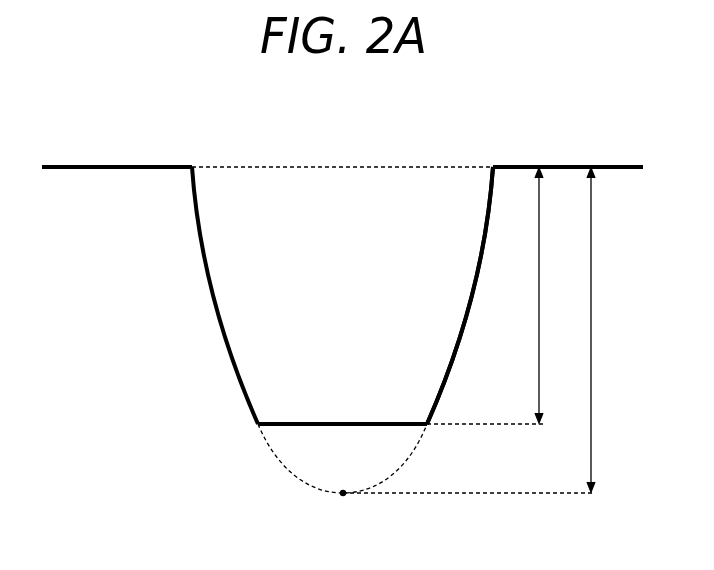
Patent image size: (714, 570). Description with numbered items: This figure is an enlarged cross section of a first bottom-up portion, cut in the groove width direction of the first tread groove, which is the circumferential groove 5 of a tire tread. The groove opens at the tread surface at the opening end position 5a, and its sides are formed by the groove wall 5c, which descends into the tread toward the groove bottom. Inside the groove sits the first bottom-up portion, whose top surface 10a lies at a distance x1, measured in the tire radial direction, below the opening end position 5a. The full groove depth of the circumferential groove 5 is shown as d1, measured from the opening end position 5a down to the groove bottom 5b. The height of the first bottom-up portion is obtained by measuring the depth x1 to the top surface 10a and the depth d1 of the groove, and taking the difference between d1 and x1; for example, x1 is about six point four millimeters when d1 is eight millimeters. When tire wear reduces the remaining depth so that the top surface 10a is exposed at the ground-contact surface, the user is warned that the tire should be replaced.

The circumferential groove 5 is at (351, 235).
The opening end position 5a is at (258, 162).
The virtual bottom point of groove 5b is at (343, 496).
The groove wall 5c is at (478, 270).
The top surface 10a is at (343, 422).
The distance from opening end position to top surface x1 is at (501, 296).
The groove depth of the circumferential groove d1 is at (486, 330).